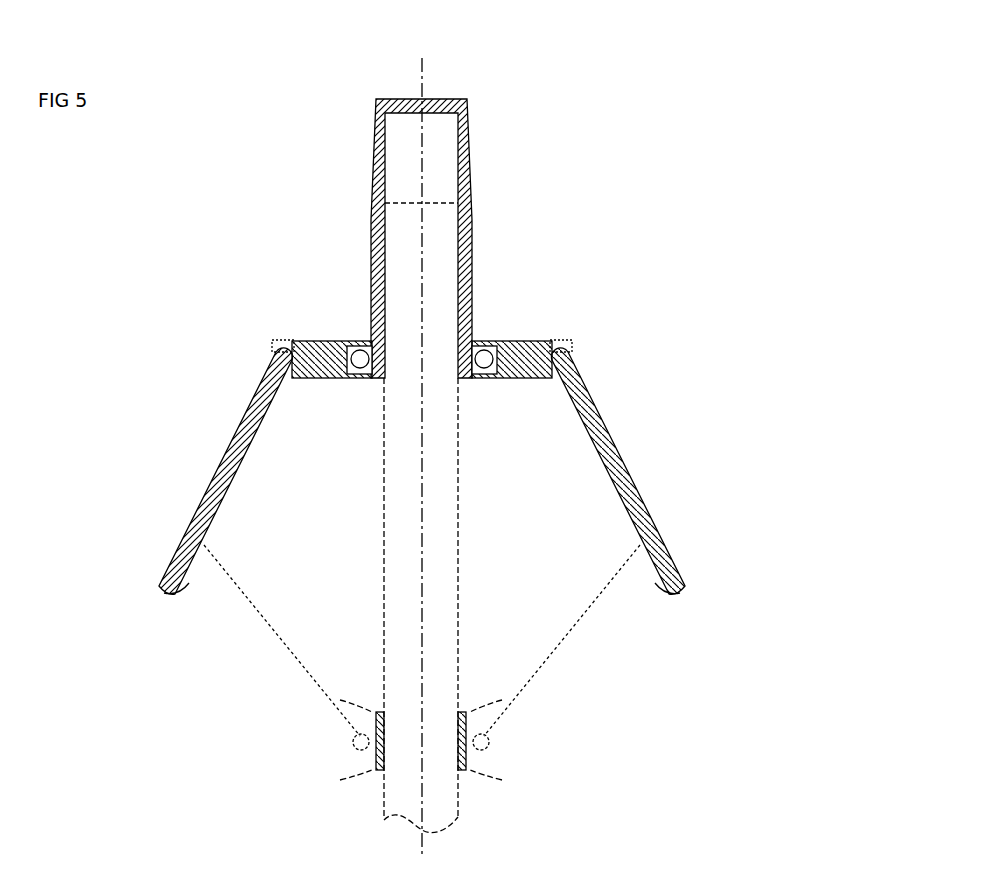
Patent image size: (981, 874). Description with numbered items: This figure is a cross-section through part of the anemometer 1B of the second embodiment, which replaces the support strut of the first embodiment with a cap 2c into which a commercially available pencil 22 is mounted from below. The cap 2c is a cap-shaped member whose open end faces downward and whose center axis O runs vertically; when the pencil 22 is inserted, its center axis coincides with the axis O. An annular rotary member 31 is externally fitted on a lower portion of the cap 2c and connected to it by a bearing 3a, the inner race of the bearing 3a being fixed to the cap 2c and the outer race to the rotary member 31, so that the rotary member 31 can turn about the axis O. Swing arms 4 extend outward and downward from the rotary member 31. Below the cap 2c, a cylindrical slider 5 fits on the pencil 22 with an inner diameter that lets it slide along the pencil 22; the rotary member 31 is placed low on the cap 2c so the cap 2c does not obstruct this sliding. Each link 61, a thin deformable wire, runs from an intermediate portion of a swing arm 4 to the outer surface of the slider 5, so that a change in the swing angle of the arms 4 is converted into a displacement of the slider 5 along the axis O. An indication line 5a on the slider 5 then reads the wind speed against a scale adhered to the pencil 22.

The center axis O is at (424, 90).
The anemometer 1B is at (530, 84).
The cap 2c is at (470, 186).
The pencil 22 is at (447, 540).
The rotary member 31 is at (315, 343).
The bearing 3a is at (363, 378).
The swing arm 4 is at (258, 410).
The slider 5 is at (378, 770).
The indication line 5a is at (365, 712).
The link 61 is at (278, 650).